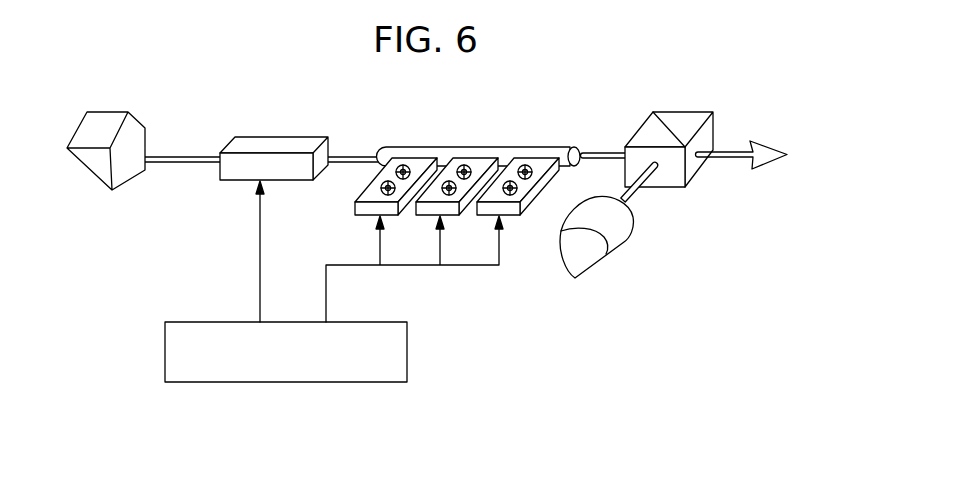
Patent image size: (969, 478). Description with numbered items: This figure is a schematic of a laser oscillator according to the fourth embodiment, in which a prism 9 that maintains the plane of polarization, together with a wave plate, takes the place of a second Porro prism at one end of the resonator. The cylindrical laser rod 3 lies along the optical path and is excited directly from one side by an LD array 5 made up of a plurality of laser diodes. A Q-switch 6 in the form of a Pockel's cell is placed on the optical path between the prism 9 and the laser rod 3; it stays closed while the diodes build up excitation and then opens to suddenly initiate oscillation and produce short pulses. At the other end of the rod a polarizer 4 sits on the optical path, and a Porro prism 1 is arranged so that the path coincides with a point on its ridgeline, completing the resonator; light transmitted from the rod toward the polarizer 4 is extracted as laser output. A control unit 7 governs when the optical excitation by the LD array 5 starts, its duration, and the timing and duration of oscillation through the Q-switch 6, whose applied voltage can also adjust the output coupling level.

The Porro prism 1 is at (613, 242).
The laser rod 3 is at (483, 147).
The polarizer 4 is at (675, 117).
The LD array 5 is at (355, 205).
The Q-switch 6 is at (283, 140).
The control unit 7 is at (247, 382).
The prism that maintains the plane of polarization 9 is at (118, 112).